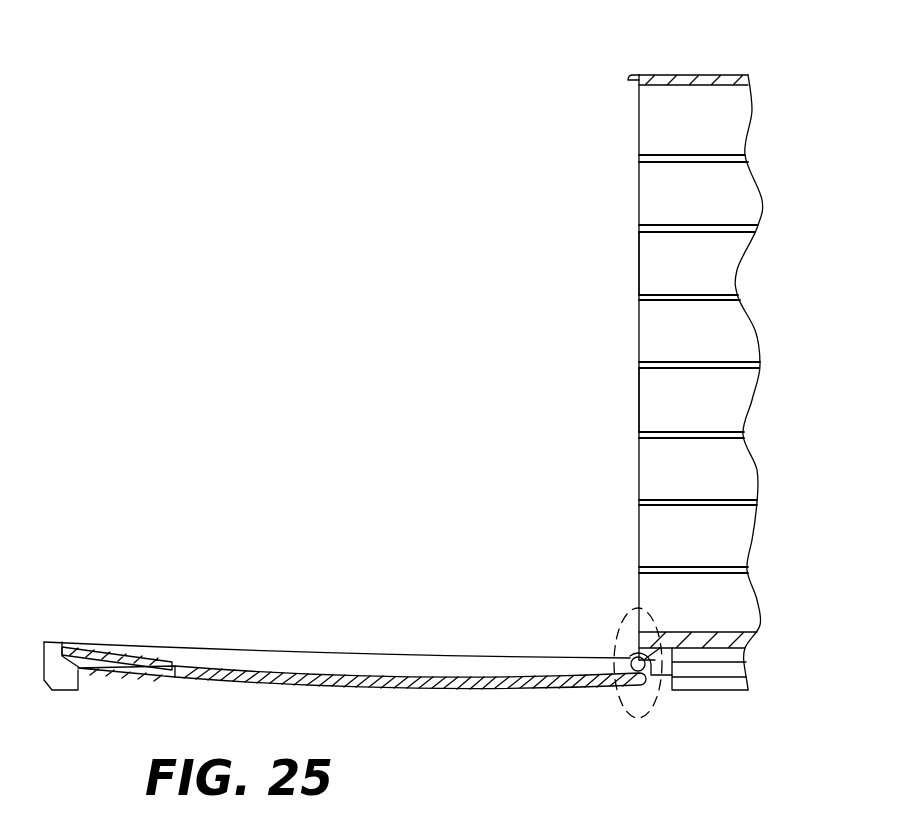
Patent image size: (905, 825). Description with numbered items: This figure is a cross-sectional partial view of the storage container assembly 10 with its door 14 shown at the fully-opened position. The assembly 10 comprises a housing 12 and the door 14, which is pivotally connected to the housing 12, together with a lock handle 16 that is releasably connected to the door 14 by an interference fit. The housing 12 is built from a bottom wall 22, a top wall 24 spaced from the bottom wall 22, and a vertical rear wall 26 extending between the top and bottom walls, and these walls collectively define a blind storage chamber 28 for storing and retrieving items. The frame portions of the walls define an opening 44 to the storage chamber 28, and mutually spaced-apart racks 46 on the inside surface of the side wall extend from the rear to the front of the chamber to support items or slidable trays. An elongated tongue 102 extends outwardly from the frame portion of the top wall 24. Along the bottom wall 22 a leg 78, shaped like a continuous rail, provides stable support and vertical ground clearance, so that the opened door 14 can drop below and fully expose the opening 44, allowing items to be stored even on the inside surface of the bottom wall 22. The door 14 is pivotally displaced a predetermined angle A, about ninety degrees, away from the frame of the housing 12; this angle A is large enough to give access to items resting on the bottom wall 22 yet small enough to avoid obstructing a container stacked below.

The storage container assembly 10 is at (345, 315).
The housing 12 is at (760, 331).
The door 14 is at (356, 690).
The lock handle 16 is at (47, 688).
The bottom wall 22 is at (731, 632).
The top wall 24 is at (716, 75).
The rear wall 26 is at (612, 632).
The storage chamber 28 is at (703, 405).
The opening 44 is at (638, 265).
The racks 46 is at (680, 226).
The leg 78 is at (710, 688).
The tongue 102 is at (633, 80).
The angle A is at (635, 398).